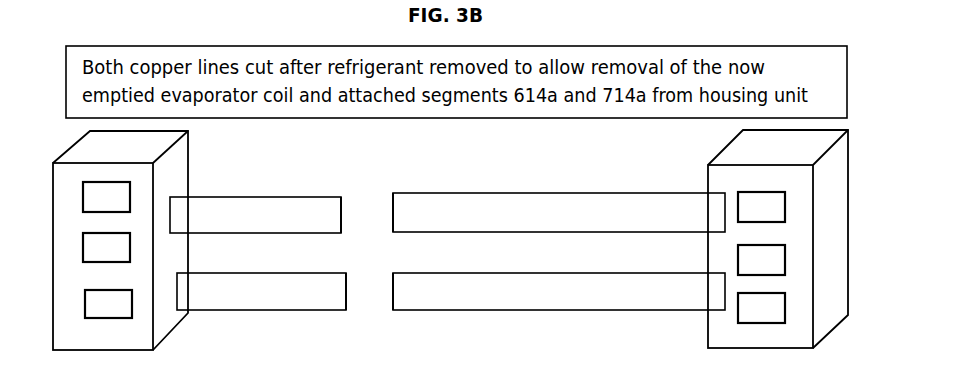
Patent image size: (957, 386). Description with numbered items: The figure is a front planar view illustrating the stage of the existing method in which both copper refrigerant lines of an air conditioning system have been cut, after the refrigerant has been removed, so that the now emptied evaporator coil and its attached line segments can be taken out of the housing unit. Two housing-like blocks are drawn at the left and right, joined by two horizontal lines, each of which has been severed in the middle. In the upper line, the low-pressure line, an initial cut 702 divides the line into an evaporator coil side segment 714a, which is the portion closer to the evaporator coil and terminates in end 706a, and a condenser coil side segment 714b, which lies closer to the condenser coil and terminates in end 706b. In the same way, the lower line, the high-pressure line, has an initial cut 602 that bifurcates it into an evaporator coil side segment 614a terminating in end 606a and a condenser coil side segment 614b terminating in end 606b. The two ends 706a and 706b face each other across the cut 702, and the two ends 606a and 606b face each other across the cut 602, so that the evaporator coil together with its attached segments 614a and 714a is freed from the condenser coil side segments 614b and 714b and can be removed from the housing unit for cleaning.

The evaporator coil side segment of low-pressure line 714a is at (253, 214).
The end of evaporator coil side segment 714a 706a is at (337, 210).
The initial cut in low-pressure line 702 is at (365, 213).
The end of condenser coil side segment 714b 706b is at (405, 203).
The condenser coil side segment of low-pressure line 714b is at (567, 214).
The evaporator coil side segment of high-pressure line 614a is at (254, 290).
The end of evaporator coil side segment 614a 606a is at (337, 296).
The initial cut in high-pressure line 602 is at (367, 297).
The end of condenser coil side segment 614b 606b is at (405, 296).
The condenser coil side segment of high-pressure line 614b is at (580, 299).